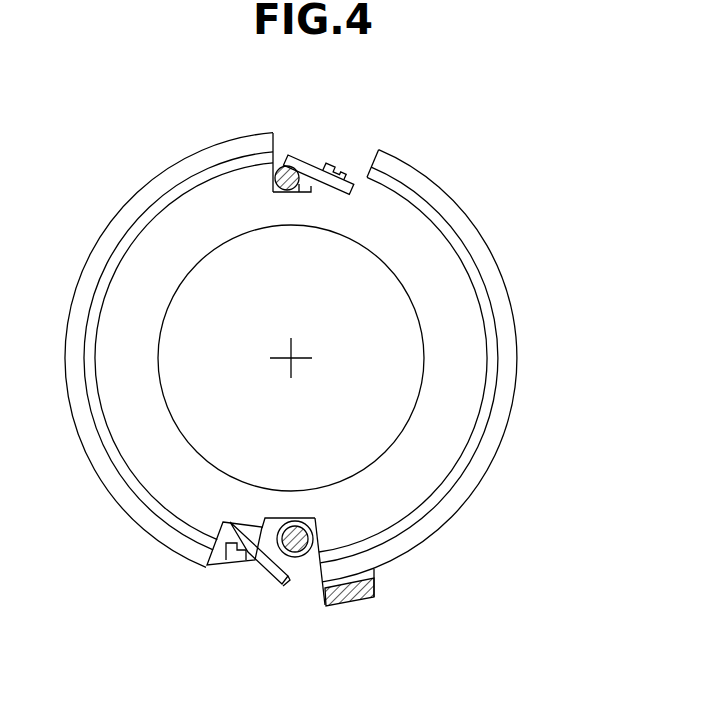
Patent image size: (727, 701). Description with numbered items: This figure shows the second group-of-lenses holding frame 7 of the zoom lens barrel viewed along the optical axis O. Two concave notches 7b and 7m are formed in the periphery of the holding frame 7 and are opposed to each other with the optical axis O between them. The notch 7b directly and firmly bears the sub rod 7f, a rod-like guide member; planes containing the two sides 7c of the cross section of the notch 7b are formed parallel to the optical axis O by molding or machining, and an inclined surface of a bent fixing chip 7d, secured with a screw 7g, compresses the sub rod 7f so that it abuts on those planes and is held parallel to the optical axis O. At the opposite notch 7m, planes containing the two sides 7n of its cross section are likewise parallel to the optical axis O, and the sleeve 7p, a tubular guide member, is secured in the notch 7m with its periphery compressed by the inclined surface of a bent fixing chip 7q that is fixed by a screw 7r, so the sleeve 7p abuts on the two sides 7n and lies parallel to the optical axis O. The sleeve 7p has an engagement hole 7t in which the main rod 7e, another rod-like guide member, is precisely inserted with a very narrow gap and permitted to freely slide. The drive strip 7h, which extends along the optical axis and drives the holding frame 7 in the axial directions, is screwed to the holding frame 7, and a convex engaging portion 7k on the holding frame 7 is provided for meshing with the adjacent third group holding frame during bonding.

The second group-of-lenses holding frame 7 is at (447, 262).
The convex engaging portion 7k is at (487, 313).
The optical axis O is at (293, 357).
The notch 7b is at (300, 193).
The two sides of cross section of notch 7c is at (280, 198).
The bent fixing chip 7d is at (310, 158).
The sub rod 7f is at (286, 164).
The screw 7g is at (348, 167).
The notch 7m is at (299, 513).
The two sides of cross section of notch 7n is at (297, 511).
The engagement hole 7t is at (264, 516).
The screw 7r is at (232, 560).
The bent fixing chip 7q is at (268, 562).
The sleeve 7p is at (286, 576).
The main rod 7e is at (310, 568).
The drive strip 7h is at (363, 600).